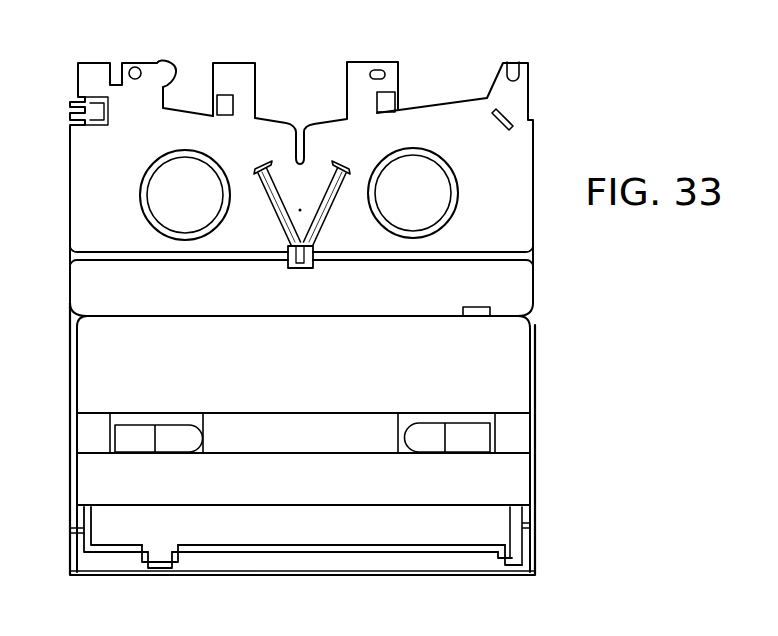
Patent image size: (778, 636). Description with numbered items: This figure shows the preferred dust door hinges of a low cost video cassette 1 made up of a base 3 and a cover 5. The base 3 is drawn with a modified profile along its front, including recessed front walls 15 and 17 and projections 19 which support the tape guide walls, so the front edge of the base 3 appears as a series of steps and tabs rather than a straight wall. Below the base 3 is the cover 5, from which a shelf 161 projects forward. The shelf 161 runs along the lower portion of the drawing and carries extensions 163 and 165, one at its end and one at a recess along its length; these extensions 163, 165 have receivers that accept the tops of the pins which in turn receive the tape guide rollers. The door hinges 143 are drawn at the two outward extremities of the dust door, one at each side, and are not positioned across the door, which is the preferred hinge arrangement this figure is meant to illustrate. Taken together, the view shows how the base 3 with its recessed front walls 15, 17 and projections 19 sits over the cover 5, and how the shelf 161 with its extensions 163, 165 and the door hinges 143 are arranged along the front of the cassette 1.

The video cassette 1 is at (62, 288).
The base 3 is at (69, 172).
The cover 5 is at (70, 478).
The recessed front wall 15 is at (460, 102).
The recessed front wall 17 is at (188, 110).
The projection 19 is at (255, 92).
The door hinge 143 is at (72, 532).
The shelf 161 is at (274, 528).
The extension 163 is at (497, 570).
The extension 165 is at (157, 575).